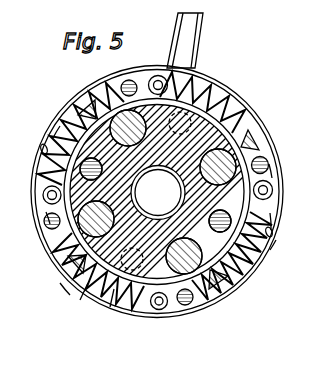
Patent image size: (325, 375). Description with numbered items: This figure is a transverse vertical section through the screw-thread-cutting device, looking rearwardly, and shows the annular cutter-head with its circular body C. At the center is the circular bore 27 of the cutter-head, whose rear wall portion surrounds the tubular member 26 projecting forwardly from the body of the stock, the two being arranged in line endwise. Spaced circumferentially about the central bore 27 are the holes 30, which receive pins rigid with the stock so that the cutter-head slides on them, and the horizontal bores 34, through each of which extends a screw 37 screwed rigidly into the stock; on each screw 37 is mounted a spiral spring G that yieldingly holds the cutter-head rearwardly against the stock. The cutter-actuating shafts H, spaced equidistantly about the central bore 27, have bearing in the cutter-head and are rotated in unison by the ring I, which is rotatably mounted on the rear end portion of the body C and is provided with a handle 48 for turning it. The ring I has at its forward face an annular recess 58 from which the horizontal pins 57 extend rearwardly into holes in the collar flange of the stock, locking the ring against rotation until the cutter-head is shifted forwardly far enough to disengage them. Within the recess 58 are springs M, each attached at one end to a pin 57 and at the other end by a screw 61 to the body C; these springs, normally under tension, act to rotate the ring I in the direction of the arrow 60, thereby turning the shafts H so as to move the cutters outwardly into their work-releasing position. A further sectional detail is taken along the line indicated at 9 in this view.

The tubular member 26 is at (175, 189).
The central bore 27 is at (160, 222).
The holes 30 is at (218, 108).
The horizontal bores 34 is at (53, 136).
The screw 37 is at (40, 212).
The handle 48 is at (200, 41).
The pins 57 is at (158, 75).
The annular recess 58 is at (63, 283).
The arrow 60 is at (237, 22).
The screw 61 is at (131, 80).
The ring part 9 is at (272, 163).
The cutter-actuating shaft H is at (64, 113).
The springs M is at (270, 125).
The spiral springs G is at (42, 147).
The ring I is at (80, 300).
The body of the cutter-head C is at (110, 307).